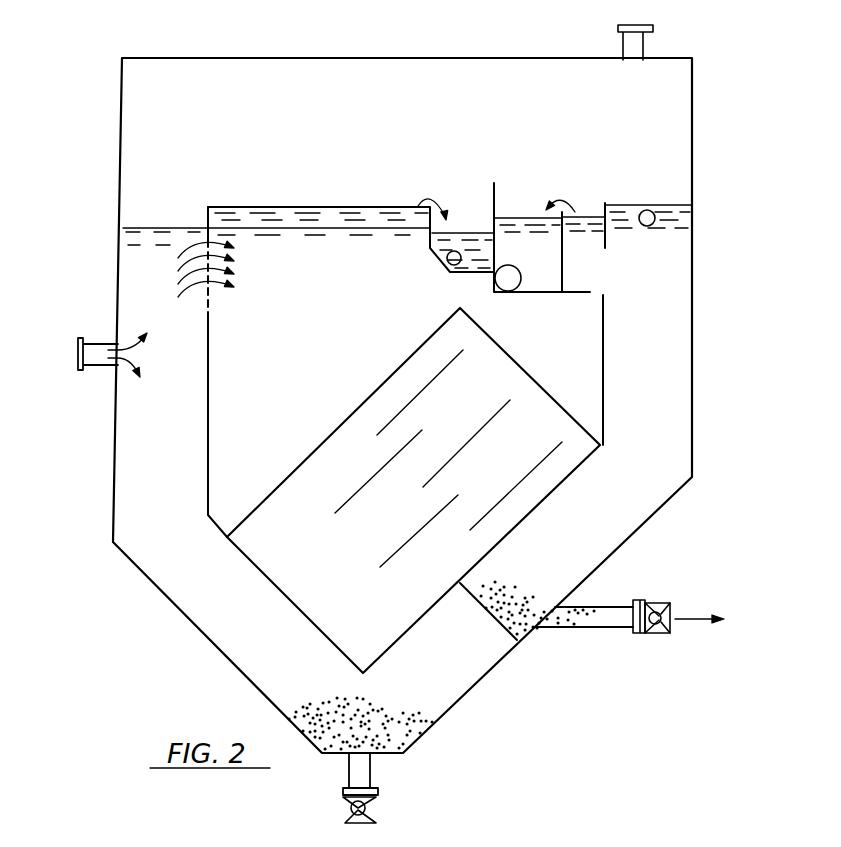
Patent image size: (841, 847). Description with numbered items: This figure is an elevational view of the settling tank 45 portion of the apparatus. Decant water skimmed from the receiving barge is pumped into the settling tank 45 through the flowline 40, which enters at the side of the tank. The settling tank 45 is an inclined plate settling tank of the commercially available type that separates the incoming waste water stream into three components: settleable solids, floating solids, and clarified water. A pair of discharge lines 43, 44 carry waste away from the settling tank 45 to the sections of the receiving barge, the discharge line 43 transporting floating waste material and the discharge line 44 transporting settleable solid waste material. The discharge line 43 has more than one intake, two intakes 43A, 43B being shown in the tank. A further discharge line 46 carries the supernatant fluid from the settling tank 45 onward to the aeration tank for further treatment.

The flowline 40 is at (97, 344).
The discharge line 43 is at (603, 607).
The intake 43A is at (651, 226).
The intake 43B is at (447, 262).
The discharge line 44 is at (373, 772).
The settling tank 45 is at (115, 492).
The discharge line 46 is at (514, 296).